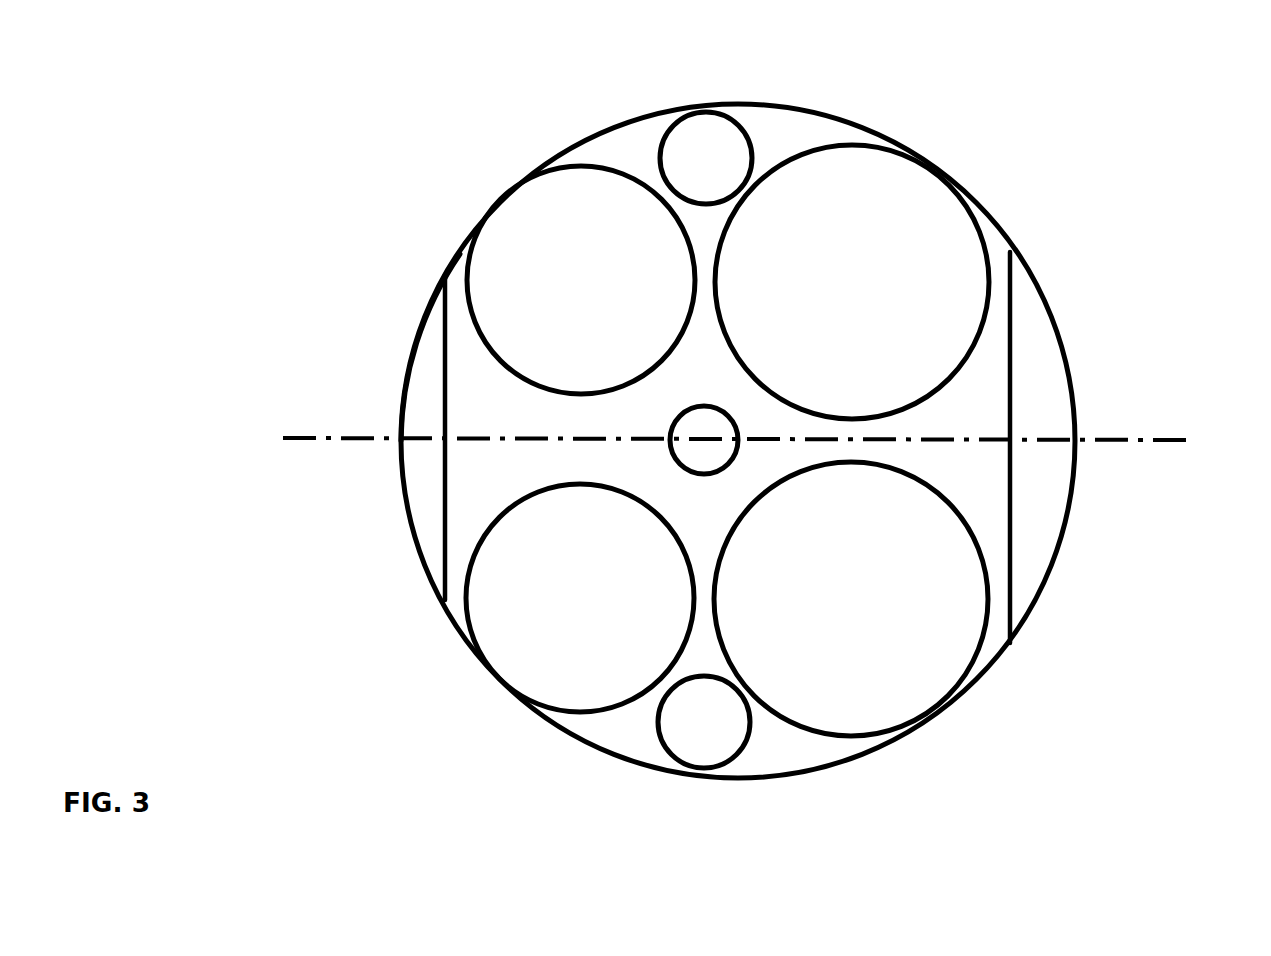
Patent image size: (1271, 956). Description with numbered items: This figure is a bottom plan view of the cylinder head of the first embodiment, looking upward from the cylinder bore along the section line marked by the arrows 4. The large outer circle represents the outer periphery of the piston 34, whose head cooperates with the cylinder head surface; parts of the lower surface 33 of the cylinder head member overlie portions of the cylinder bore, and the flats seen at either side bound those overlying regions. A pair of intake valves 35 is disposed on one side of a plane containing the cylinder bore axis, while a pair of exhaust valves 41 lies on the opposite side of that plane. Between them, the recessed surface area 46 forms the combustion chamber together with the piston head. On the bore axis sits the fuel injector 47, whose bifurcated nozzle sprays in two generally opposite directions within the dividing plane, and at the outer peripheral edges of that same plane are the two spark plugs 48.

The lower surface 33 is at (422, 408).
The piston 34 is at (405, 370).
The intake valves 35 is at (897, 223).
The exhaust valves 41 is at (513, 258).
The recessed surface area 46 is at (522, 419).
The fuel injector 47 is at (703, 462).
The spark plugs 48 is at (705, 147).
The section line 4- 4 is at (310, 438).